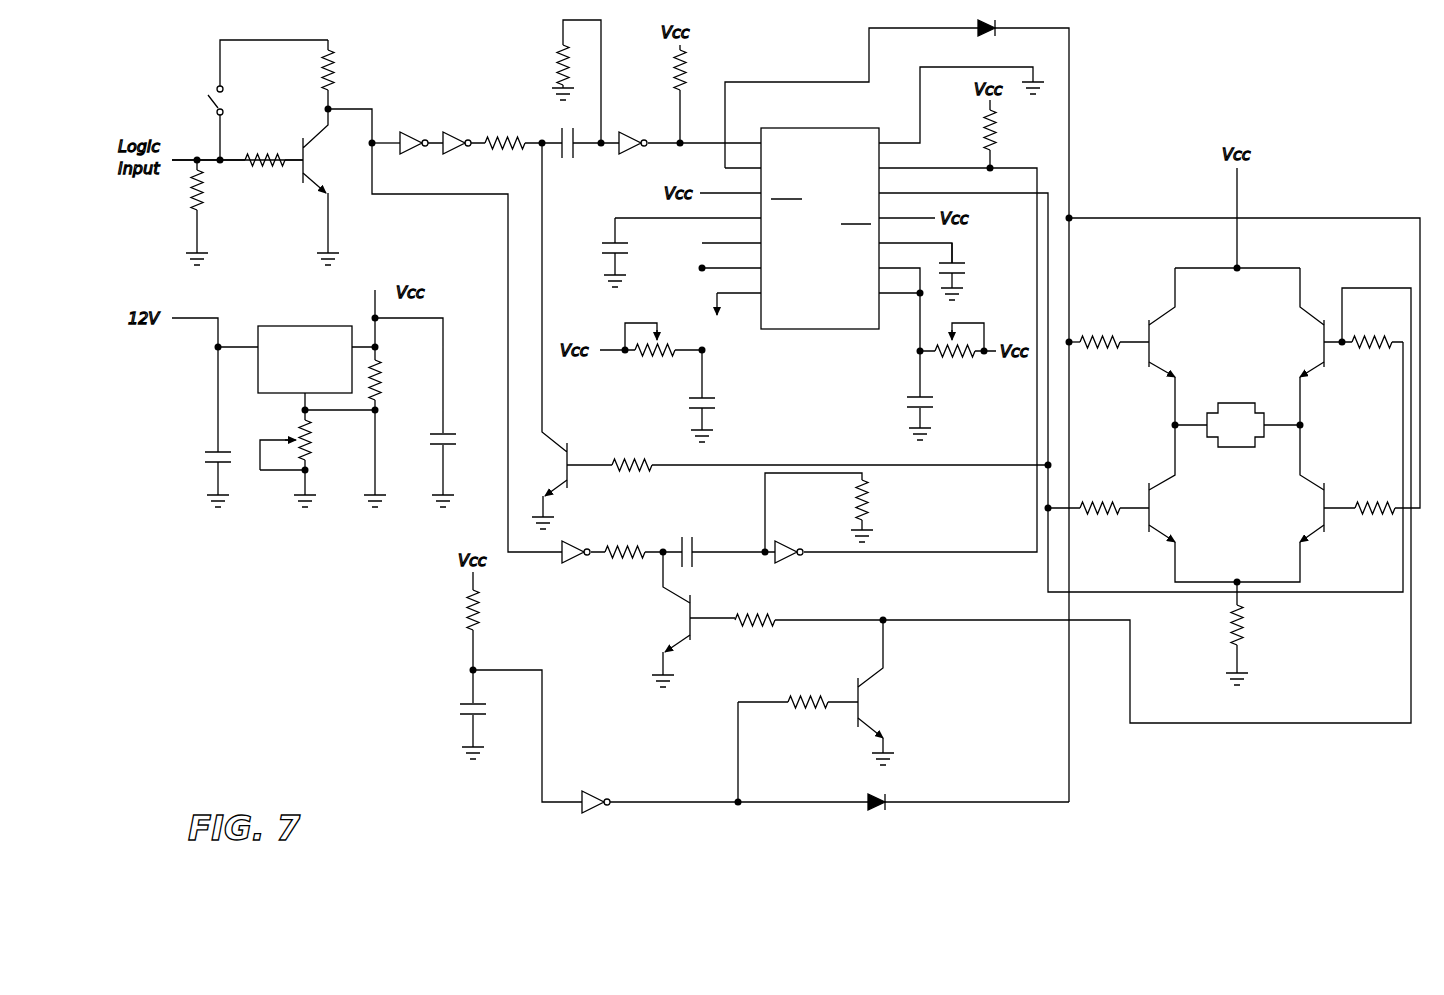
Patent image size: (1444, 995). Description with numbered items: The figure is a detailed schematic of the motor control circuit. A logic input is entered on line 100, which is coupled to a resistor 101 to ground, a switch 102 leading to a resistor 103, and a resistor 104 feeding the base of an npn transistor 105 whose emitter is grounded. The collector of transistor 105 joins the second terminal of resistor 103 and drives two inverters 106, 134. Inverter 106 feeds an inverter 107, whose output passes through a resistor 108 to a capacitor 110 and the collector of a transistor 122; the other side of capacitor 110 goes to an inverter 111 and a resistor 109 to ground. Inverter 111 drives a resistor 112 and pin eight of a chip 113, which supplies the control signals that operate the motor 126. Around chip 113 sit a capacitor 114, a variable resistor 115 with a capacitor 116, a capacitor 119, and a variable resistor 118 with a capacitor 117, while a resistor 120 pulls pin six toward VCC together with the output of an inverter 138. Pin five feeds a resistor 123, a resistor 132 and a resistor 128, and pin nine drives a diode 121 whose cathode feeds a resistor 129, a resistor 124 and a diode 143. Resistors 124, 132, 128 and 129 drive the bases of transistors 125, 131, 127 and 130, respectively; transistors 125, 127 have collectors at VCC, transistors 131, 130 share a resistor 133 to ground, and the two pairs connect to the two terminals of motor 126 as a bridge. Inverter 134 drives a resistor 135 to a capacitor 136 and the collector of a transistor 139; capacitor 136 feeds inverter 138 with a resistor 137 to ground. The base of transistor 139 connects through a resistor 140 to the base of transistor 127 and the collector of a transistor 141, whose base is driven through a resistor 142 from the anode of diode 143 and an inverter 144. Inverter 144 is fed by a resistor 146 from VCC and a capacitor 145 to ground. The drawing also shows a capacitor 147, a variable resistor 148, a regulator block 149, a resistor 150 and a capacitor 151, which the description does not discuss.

The line 100 is at (190, 158).
The resistor 101 is at (205, 190).
The switch 102 is at (223, 86).
The resistor 103 is at (332, 62).
The resistor 104 is at (262, 155).
The npn transistor 105 is at (310, 150).
The inverter 106 is at (412, 133).
The inverter 107 is at (455, 133).
The resistor 108 is at (502, 135).
The resistor 109 is at (556, 58).
The capacitor 110 is at (575, 150).
The inverter 111 is at (632, 133).
The resistor 112 is at (684, 60).
The chip 113 is at (845, 128).
The capacitor 114 is at (610, 240).
The variable resistor 115 is at (648, 322).
The capacitor 116 is at (706, 395).
The capacitor 117 is at (924, 394).
The variable resistor 118 is at (972, 322).
The capacitor 119 is at (958, 260).
The resistor 120 is at (983, 128).
The diode 121 is at (975, 33).
The npn transistor 122 is at (572, 448).
The resistor 123 is at (625, 460).
The resistor 124 is at (1100, 336).
The transistor 125 is at (1140, 355).
The motor 126 is at (1236, 403).
The transistor 127 is at (1328, 360).
The resistor 128 is at (1368, 336).
The resistor 129 is at (1378, 500).
The transistor 130 is at (1328, 522).
The transistor 131 is at (1143, 520).
The resistor 132 is at (1100, 502).
The resistor 133 is at (1242, 618).
The inverter 134 is at (575, 542).
The resistor 135 is at (622, 545).
The capacitor 136 is at (696, 540).
The resistor 137 is at (868, 495).
The inverter 138 is at (788, 542).
The transistor 139 is at (695, 605).
The resistor 140 is at (752, 612).
The transistor 141 is at (855, 712).
The resistor 142 is at (808, 696).
The diode 143 is at (880, 812).
The inverter 144 is at (598, 790).
The capacitor 145 is at (465, 700).
The resistor 146 is at (478, 602).
The capacitor 147 is at (214, 450).
The potentiometer 148 is at (312, 445).
The voltage regulator 149 is at (313, 326).
The resistor 150 is at (380, 372).
The capacitor 151 is at (447, 430).